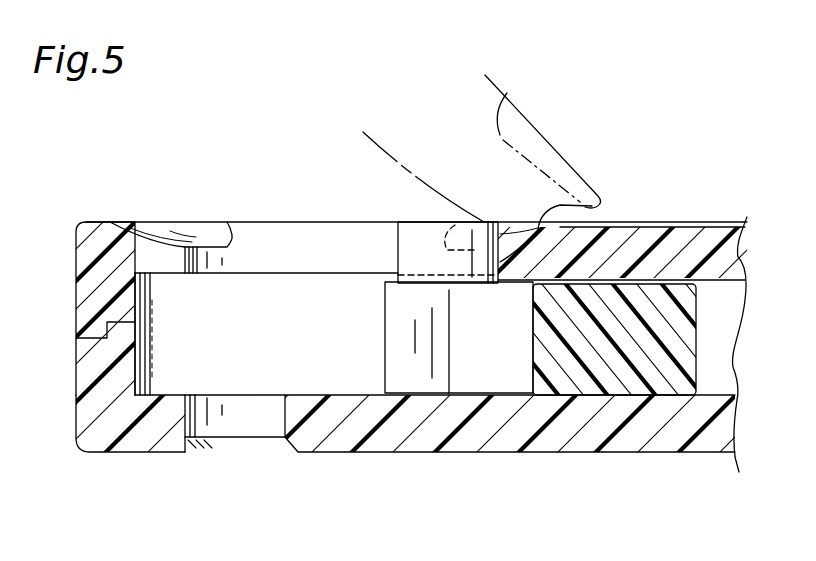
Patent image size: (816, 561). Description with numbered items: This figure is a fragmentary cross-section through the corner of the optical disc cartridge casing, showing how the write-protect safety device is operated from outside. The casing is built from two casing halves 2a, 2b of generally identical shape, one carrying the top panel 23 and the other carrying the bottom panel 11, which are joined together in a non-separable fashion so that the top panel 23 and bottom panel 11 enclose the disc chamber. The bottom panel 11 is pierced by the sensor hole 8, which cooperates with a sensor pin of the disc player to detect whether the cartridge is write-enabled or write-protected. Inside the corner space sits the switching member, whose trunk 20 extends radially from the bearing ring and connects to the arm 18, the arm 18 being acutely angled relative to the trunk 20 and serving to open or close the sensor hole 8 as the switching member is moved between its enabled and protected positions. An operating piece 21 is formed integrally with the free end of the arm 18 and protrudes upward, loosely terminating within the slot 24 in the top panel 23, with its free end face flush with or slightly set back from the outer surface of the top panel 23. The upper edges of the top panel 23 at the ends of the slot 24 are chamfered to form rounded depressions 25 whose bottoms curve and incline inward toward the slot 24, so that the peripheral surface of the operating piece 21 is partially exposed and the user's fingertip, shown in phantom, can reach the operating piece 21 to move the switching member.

The casing half 2a is at (95, 228).
The casing half 2b is at (88, 452).
The sensor hole 8 is at (243, 425).
The bottom panel 11 is at (362, 425).
The arm 18 is at (397, 343).
The trunk 20 is at (553, 330).
The operating piece 21 is at (407, 250).
The top panel 23 is at (695, 230).
The slot 24 is at (298, 250).
The depression 25 is at (188, 226).